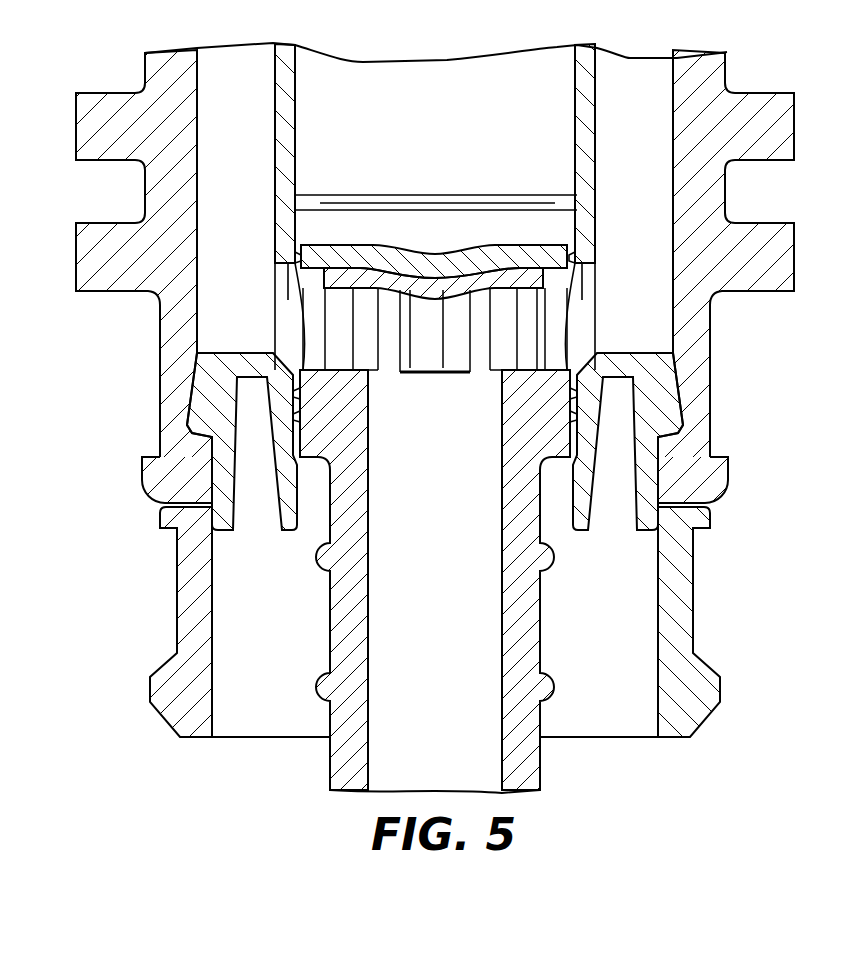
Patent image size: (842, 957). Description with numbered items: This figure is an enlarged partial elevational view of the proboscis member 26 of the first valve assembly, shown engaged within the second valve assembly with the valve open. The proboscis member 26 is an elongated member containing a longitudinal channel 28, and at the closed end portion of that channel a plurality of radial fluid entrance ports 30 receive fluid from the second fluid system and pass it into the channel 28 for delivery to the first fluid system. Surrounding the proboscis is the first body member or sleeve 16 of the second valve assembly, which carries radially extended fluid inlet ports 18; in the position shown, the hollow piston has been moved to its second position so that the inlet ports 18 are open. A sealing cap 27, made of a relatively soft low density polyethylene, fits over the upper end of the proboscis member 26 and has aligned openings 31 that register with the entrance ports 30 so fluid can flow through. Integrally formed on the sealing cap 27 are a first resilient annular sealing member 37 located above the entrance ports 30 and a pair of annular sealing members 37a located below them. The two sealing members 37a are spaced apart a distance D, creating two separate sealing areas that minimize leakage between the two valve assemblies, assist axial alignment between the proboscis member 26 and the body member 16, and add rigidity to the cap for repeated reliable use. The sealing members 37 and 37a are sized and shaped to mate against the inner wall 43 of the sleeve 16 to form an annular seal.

The first body member or sleeve 16 is at (274, 167).
The fluid inlet ports 18 is at (275, 322).
The proboscis member 26 is at (327, 628).
The sealing cap 27 is at (338, 262).
The longitudinal channel 28 is at (367, 710).
The radial fluid entrance ports 30 is at (415, 340).
The aligned openings 31 is at (333, 315).
The first resilient annular sealing member 37 is at (292, 257).
The annular sealing members 37a is at (295, 417).
The inner wall 43 is at (297, 356).
The distance D is at (296, 417).